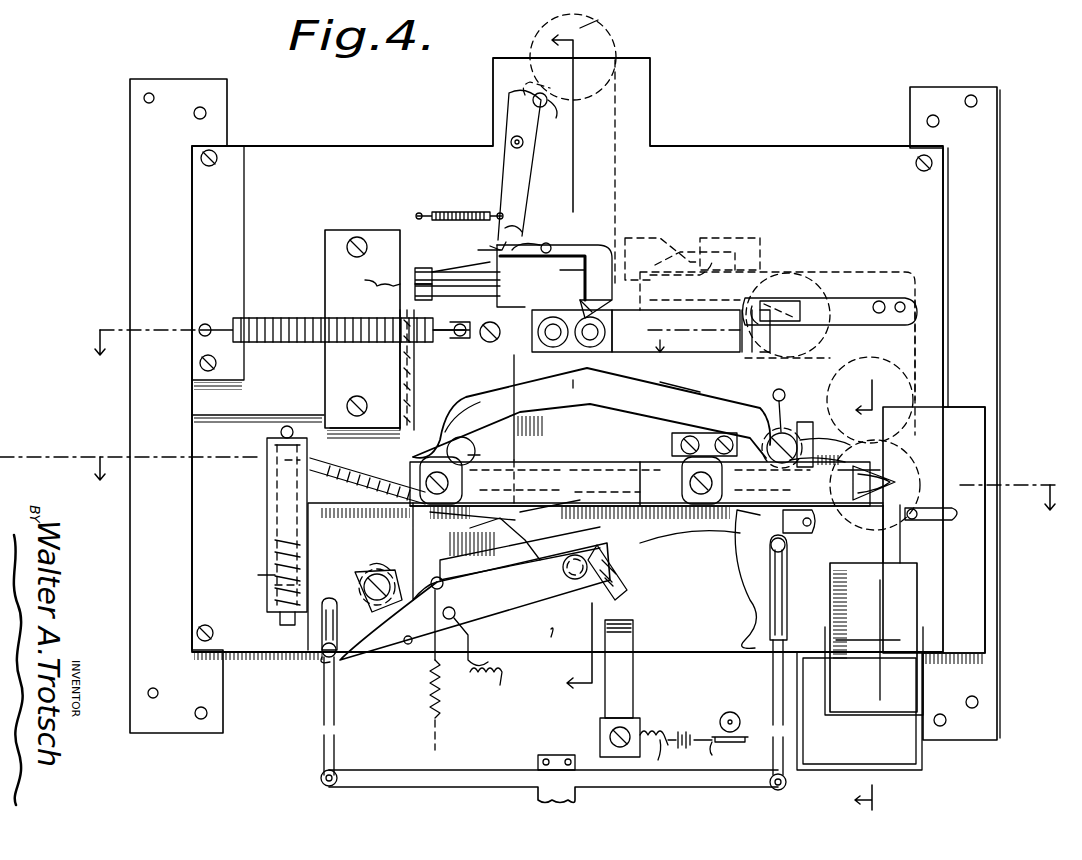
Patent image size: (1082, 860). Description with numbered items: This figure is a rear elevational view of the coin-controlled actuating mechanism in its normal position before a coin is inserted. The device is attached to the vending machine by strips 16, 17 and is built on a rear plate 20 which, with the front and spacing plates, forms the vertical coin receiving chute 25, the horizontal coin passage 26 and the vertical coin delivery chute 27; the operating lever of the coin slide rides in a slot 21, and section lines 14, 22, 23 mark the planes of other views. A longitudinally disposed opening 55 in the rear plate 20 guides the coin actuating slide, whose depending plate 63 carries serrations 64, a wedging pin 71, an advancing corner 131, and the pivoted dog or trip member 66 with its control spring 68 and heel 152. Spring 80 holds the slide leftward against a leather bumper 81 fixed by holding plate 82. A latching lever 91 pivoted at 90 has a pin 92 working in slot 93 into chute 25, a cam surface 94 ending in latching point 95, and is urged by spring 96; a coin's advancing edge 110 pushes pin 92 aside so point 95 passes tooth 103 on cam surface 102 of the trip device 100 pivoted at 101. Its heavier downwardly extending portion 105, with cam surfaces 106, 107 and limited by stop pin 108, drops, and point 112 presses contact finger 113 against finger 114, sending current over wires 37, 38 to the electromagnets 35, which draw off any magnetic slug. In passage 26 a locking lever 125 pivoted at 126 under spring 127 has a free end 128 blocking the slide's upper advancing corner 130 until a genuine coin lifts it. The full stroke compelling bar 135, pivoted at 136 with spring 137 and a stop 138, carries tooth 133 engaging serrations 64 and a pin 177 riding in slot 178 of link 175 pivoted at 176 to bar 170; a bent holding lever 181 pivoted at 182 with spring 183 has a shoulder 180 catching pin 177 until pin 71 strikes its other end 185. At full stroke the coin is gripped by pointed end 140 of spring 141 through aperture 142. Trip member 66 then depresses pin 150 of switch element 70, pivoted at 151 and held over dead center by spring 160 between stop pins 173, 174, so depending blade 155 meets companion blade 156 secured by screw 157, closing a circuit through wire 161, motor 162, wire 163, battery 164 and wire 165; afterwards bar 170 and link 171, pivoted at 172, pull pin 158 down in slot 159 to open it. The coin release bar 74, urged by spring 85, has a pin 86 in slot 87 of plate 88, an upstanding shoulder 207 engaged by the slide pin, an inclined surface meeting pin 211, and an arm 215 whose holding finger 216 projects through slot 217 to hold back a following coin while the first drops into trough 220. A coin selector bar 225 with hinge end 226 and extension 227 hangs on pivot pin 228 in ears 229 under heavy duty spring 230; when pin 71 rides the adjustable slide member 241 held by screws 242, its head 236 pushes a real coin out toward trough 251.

The strip 16 is at (182, 84).
The strip 17 is at (946, 90).
The rear plate 20 is at (748, 146).
The slot 21 is at (573, 357).
The section line 22 is at (870, 585).
The section line 23 is at (405, 329).
The section line 14 is at (532, 467).
The coin receiving slot 25 is at (620, 147).
The coin passage 26 is at (768, 272).
The coin delivery chute 27 is at (914, 359).
The electromagnets 35 is at (583, 348).
The wire 37 is at (404, 258).
The wire 38 is at (371, 279).
The opening 55 is at (636, 362).
The depending plate 63 is at (398, 365).
The serrations 64 is at (488, 547).
The dog or trip member 66 is at (416, 559).
The control spring 68 is at (504, 486).
The electric switch element 70 is at (504, 592).
The wedging pin 71 is at (470, 451).
The coin release bar 74 is at (594, 485).
The spring 80 is at (288, 322).
The bumper 81 is at (400, 381).
The holding plate 82 is at (326, 364).
The spring 85 is at (366, 484).
The pin 86 is at (908, 530).
The slot 87 is at (942, 508).
The plate 88 is at (990, 564).
The pivot 90 is at (523, 141).
The latching lever 91 is at (506, 172).
The pin 92 is at (544, 106).
The slot 93 is at (528, 84).
The cam surface 94 is at (494, 241).
The latching point 95 is at (490, 246).
The spring 96 is at (468, 215).
The trip device 100 is at (590, 244).
The pivot 101 is at (558, 242).
The cam surface 102 is at (543, 250).
The tooth 103 is at (524, 226).
The downwardly extending portion 105 is at (589, 282).
The cam surface 106 is at (587, 302).
The cam surface 107 is at (606, 312).
The stop pin 108 is at (578, 258).
The advancing edge 110 is at (556, 99).
The point 112 is at (472, 264).
The electrical contact finger 113 is at (460, 264).
The companion electrical contact finger 114 is at (437, 292).
The locking lever 125 is at (678, 284).
The pivot 126 is at (748, 248).
The spring 127 is at (658, 250).
The free end 128 is at (664, 258).
The upper advancing corner 130 is at (446, 321).
The advancing corner 131 is at (508, 310).
The tooth 133 is at (604, 498).
The full stroke compelling bar 135 is at (560, 530).
The pivot 136 is at (368, 572).
The spring 137 is at (376, 564).
The stop 138 is at (728, 548).
The pointed end 140 is at (787, 308).
The spring 141 is at (845, 302).
The aperture 142 is at (768, 320).
The pin 150 is at (574, 582).
The pivot 151 is at (452, 610).
The heel 152 is at (436, 446).
The depending blade 155 is at (630, 590).
The companion blade 156 is at (634, 627).
The screw 157 is at (606, 737).
The pin 158 is at (324, 654).
The slot 159 is at (325, 633).
The spring 160 is at (426, 700).
The wire 161 is at (496, 695).
The motor 162 is at (740, 712).
The wire 163 is at (724, 751).
The battery 164 is at (684, 732).
The wire 165 is at (658, 755).
The bar 170 is at (498, 774).
The link 171 is at (324, 692).
The pivot 172 is at (319, 777).
The stop pin 173 is at (406, 646).
The stop pin 174 is at (538, 636).
The link 175 is at (772, 664).
The pivot 176 is at (784, 787).
The pin 177 is at (786, 554).
The slot 178 is at (786, 578).
The shoulder 180 is at (760, 598).
The bent holding lever 181 is at (684, 392).
The pivot 182 is at (766, 438).
The spring 183 is at (795, 409).
The other end 185 is at (455, 411).
The upstanding shoulder 207 is at (518, 475).
The pin 211 is at (760, 478).
The upwardly extending arm 215 is at (796, 536).
The holding finger 216 is at (832, 457).
The slot 217 is at (842, 442).
The trough 220 is at (905, 710).
The coin selector bar 225 is at (580, 464).
The hinge end 226 is at (264, 486).
The extension 227 is at (262, 549).
The pivot pin 228 is at (280, 432).
The ears 229 is at (272, 463).
The heavy duty spring 230 is at (258, 570).
The head 236 is at (906, 473).
The slide member 241 is at (562, 463).
The screws 242 is at (690, 478).
The trough 251 is at (812, 770).